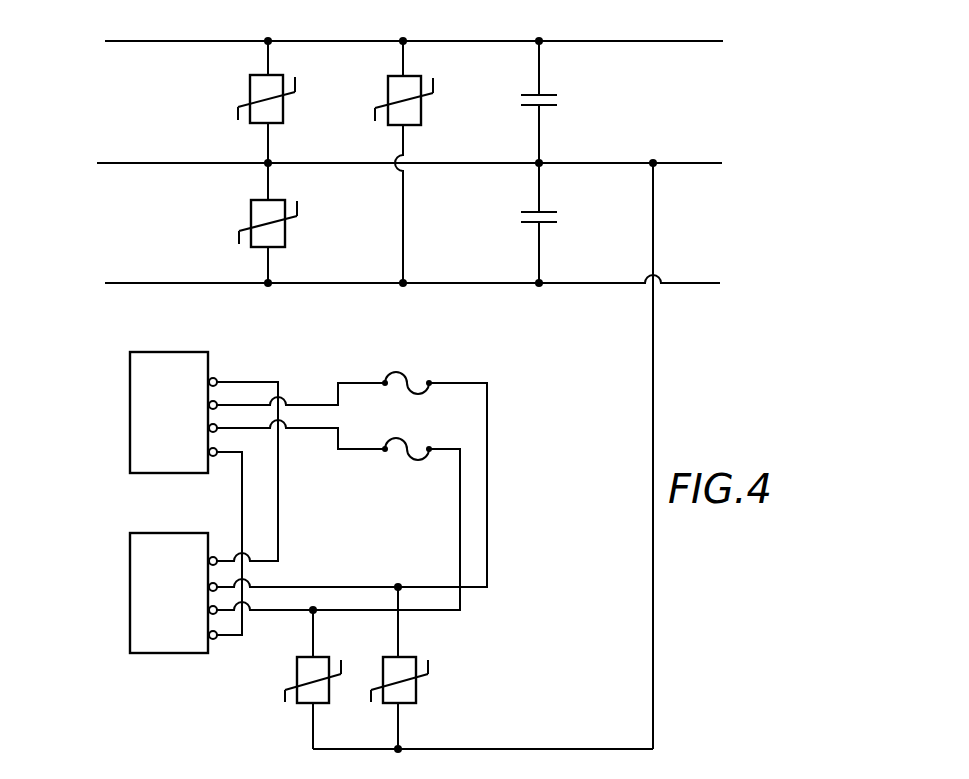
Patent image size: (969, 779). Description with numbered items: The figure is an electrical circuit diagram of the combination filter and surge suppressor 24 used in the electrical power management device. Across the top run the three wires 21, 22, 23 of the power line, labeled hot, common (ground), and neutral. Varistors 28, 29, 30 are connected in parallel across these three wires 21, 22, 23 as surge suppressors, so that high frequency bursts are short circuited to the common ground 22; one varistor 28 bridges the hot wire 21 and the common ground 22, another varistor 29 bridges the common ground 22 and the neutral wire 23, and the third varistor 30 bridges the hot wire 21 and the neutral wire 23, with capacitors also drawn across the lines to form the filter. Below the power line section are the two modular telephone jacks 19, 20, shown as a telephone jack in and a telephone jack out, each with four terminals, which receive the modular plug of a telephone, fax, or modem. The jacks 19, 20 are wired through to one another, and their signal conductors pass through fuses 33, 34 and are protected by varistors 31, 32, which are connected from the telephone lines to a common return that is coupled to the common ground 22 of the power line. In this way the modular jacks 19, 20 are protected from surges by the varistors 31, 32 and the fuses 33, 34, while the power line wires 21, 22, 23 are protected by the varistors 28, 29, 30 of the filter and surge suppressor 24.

The RJ-11 modular jack 19 is at (145, 473).
The RJ-11 modular jack 20 is at (160, 653).
The power line wire 21 is at (118, 41).
The common ground wire 22 is at (118, 163).
The power line wire 23 is at (120, 283).
The combination filter and surge suppressor 24 is at (711, 131).
The varistor 28 is at (250, 95).
The varistor 29 is at (251, 215).
The varistor 30 is at (421, 98).
The varistor 31 is at (416, 690).
The varistor 32 is at (329, 690).
The fuse 33 is at (407, 460).
The fuse 34 is at (413, 354).